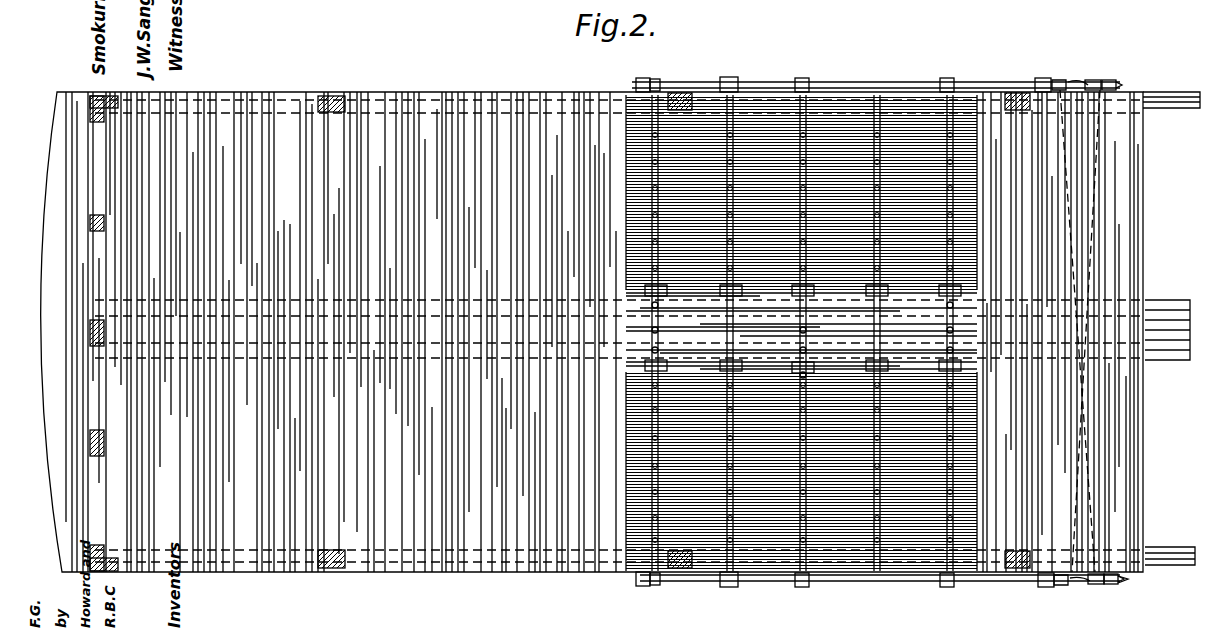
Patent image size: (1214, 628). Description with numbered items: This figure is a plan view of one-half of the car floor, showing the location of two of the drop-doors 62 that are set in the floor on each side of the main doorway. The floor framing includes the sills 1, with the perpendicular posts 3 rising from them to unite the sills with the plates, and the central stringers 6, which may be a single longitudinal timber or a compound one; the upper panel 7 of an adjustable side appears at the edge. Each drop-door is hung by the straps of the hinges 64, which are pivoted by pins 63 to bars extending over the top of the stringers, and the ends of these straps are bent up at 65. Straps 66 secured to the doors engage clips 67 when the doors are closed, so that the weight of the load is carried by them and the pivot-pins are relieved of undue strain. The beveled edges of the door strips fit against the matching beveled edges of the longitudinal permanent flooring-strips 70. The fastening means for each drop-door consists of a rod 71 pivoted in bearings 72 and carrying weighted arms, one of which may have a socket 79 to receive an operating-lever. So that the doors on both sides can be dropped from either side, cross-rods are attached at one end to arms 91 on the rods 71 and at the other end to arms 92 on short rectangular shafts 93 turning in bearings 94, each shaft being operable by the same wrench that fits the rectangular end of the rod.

The sills 1 is at (1162, 96).
The perpendicular posts 3 is at (332, 570).
The central stringers 6 is at (1162, 325).
The upper panel 7 is at (1168, 556).
The drop-doors 62 is at (801, 192).
The pins 63 is at (801, 471).
The straps of the hinges 64 is at (808, 386).
The bent-up ends of the straps 65 is at (800, 368).
The straps 66 is at (880, 130).
The clips 67 is at (913, 328).
The longitudinal permanent flooring-strips 70 is at (705, 328).
The rod 71 is at (990, 86).
The bearings 72 is at (645, 587).
The socket 79 is at (802, 587).
The arms 91 is at (1060, 79).
The arms 92 is at (1108, 80).
The short rectangular shafts 93 is at (1095, 80).
The bearings 94 is at (1128, 580).